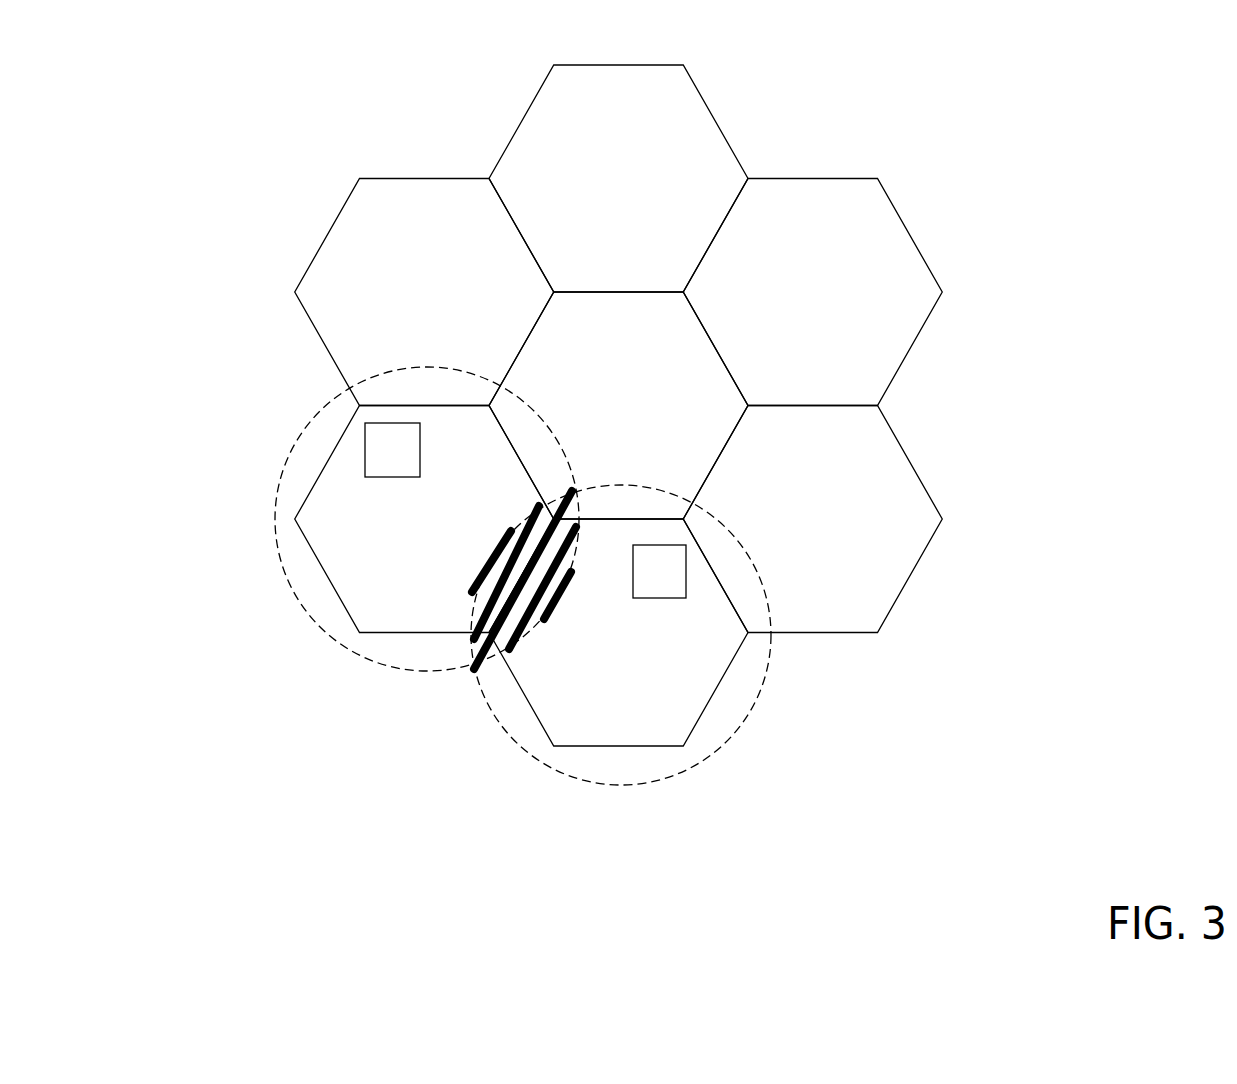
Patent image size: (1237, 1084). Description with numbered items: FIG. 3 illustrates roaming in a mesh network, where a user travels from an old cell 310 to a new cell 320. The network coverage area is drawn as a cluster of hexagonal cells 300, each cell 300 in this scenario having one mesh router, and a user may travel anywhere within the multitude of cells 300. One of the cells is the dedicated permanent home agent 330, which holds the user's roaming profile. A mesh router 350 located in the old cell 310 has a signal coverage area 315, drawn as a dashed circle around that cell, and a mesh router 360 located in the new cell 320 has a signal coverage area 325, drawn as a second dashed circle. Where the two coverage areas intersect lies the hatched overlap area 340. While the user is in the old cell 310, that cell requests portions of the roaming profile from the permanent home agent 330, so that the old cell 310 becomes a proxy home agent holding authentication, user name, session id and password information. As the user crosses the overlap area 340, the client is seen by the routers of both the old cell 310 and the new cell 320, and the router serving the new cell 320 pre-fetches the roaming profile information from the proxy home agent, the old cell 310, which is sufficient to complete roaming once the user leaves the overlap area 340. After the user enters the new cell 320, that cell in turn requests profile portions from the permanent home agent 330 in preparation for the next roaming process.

The cell 300 is at (716, 405).
The old cell 310 is at (424, 519).
The signal coverage area 315 is at (310, 620).
The new cell 320 is at (618, 632).
The signal coverage area 325 is at (575, 777).
The permanent home agent 330 is at (618, 178).
The overlap area 340 is at (463, 642).
The mesh router 350 is at (355, 453).
The mesh router 360 is at (678, 577).